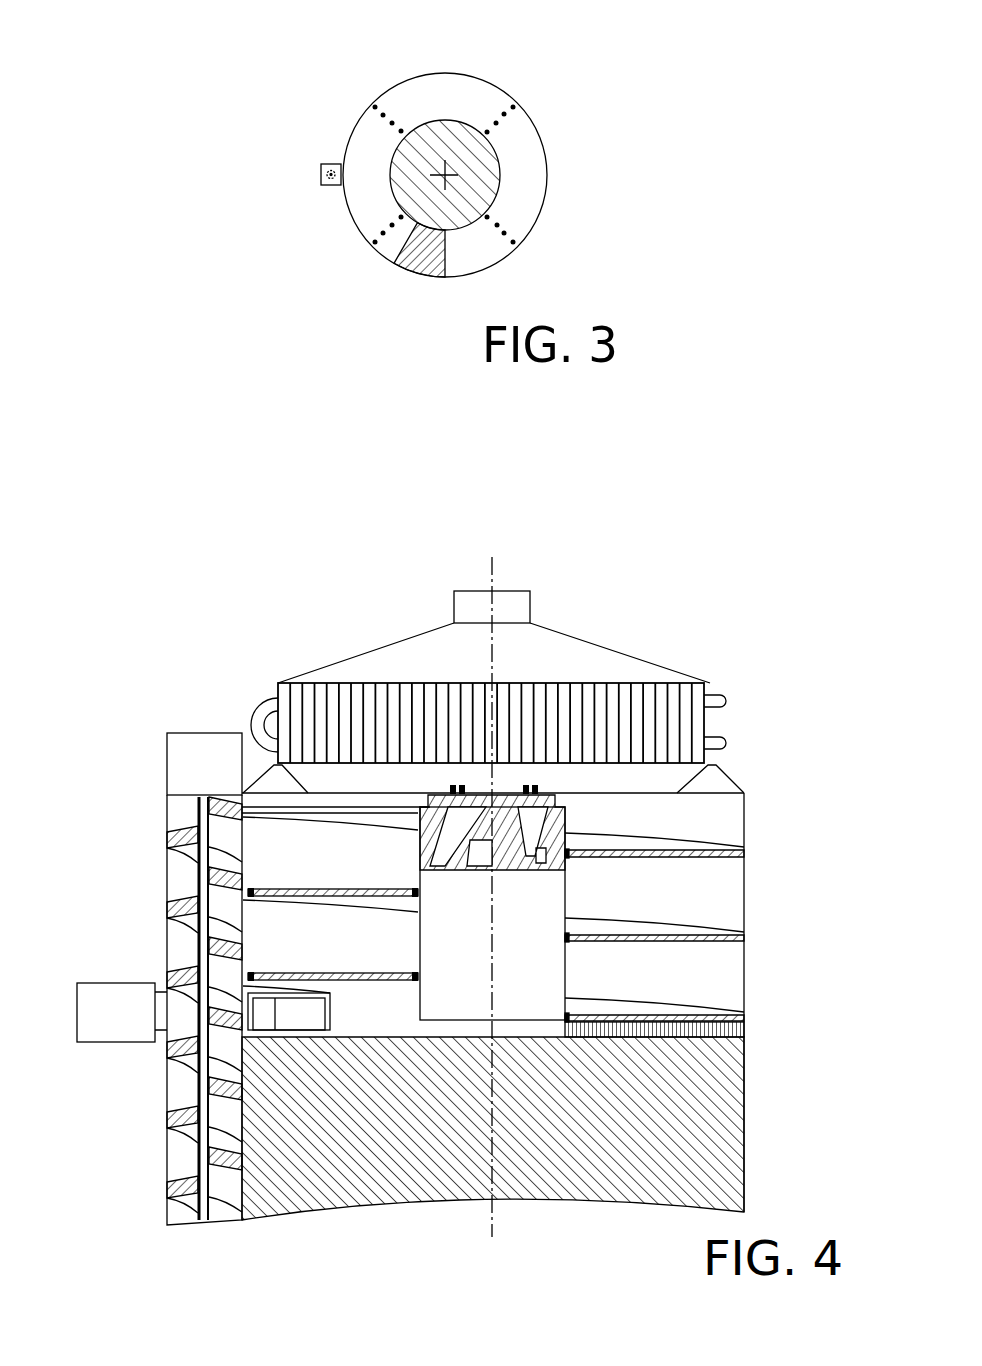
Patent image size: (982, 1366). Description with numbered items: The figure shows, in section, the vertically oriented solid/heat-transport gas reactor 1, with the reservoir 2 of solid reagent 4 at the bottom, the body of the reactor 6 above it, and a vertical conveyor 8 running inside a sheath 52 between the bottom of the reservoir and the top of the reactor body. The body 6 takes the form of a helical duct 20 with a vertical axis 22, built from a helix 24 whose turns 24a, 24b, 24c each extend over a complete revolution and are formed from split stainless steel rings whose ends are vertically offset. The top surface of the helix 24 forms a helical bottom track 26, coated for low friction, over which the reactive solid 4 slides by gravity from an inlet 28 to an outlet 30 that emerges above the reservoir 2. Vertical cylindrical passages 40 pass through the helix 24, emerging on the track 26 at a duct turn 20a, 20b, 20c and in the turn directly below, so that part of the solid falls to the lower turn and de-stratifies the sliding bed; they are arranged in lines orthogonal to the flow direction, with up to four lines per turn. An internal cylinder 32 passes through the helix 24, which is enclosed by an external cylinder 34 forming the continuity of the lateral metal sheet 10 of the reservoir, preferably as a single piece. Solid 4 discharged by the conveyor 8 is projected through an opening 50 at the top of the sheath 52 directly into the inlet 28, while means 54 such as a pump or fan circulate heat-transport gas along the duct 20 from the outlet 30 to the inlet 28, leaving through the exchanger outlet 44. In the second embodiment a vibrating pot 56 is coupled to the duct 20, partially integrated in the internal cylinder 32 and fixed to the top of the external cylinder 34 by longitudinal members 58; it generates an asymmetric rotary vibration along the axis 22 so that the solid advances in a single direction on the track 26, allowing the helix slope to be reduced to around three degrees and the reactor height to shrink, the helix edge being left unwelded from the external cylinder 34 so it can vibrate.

In FIG. 3, the reactor 1 is at (524, 74).
In FIG. 4, the reactor 1 is at (367, 639).
In FIG. 4, the reservoir 2 is at (421, 1203).
In FIG. 4, the solid reagent 4 is at (172, 822).
In FIG. 4, the body of the reactor 6 is at (634, 655).
In FIG. 3, the vertical conveyor 8 is at (319, 184).
In FIG. 4, the vertical conveyor 8 is at (161, 1159).
In FIG. 4, the lateral metal sheet 10 is at (745, 1110).
In FIG. 4, the helical duct 20 is at (660, 895).
In FIG. 4, the duct turn 20a is at (712, 830).
In FIG. 4, the duct turn 20b is at (710, 917).
In FIG. 4, the duct turn 20c is at (707, 998).
In FIG. 3, the vertical axis 22 is at (470, 160).
In FIG. 4, the vertical axis 22 is at (493, 558).
In FIG. 3, the helix 24 is at (550, 178).
In FIG. 4, the helix turn 24a is at (365, 822).
In FIG. 4, the helix turn 24b is at (374, 906).
In FIG. 3, the helix turn 24c is at (537, 203).
In FIG. 4, the helix turn 24c is at (400, 992).
In FIG. 3, the helical bottom track 26 is at (403, 93).
In FIG. 4, the helical bottom track 26 is at (195, 888).
In FIG. 4, the inlet 28 is at (267, 800).
In FIG. 4, the outlet 30 is at (372, 1020).
In FIG. 3, the internal cylinder 32 is at (447, 122).
In FIG. 4, the internal cylinder 32 is at (745, 1035).
In FIG. 3, the external cylinder 34 is at (373, 103).
In FIG. 4, the external cylinder 34 is at (747, 1013).
In FIG. 3, the passages 40 is at (513, 105).
In FIG. 4, the passages 40 is at (240, 945).
In FIG. 4, the outlet 44 is at (500, 591).
In FIG. 4, the opening 50 is at (248, 788).
In FIG. 3, the sheath 52 is at (338, 162).
In FIG. 4, the sheath 52 is at (167, 1090).
In FIG. 4, the means for circulating a heat-transport gas 54 is at (128, 983).
In FIG. 4, the vibrating pot 56 is at (442, 790).
In FIG. 4, the longitudinal members 58 is at (527, 782).